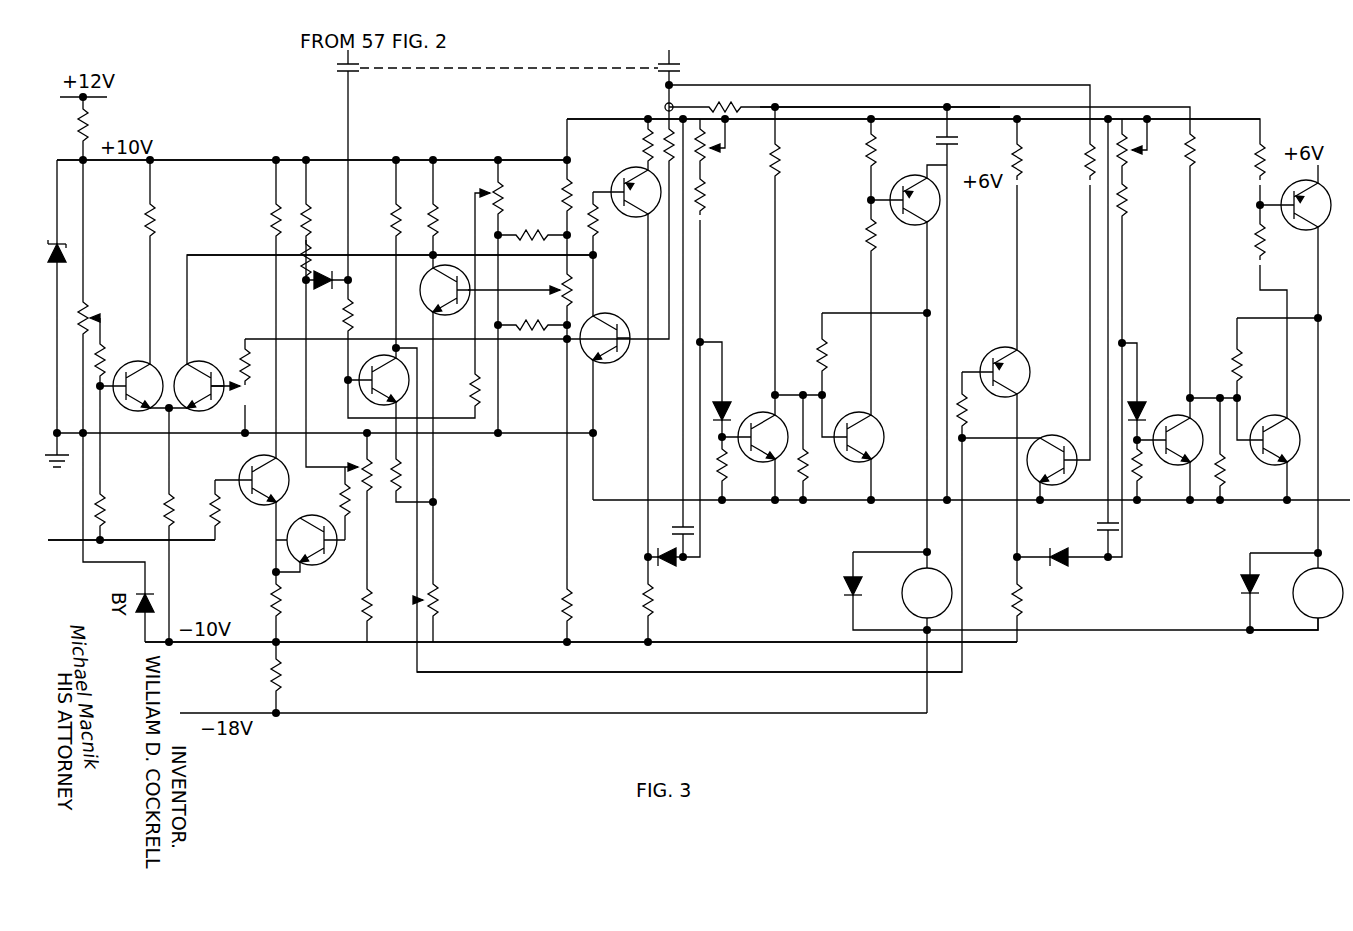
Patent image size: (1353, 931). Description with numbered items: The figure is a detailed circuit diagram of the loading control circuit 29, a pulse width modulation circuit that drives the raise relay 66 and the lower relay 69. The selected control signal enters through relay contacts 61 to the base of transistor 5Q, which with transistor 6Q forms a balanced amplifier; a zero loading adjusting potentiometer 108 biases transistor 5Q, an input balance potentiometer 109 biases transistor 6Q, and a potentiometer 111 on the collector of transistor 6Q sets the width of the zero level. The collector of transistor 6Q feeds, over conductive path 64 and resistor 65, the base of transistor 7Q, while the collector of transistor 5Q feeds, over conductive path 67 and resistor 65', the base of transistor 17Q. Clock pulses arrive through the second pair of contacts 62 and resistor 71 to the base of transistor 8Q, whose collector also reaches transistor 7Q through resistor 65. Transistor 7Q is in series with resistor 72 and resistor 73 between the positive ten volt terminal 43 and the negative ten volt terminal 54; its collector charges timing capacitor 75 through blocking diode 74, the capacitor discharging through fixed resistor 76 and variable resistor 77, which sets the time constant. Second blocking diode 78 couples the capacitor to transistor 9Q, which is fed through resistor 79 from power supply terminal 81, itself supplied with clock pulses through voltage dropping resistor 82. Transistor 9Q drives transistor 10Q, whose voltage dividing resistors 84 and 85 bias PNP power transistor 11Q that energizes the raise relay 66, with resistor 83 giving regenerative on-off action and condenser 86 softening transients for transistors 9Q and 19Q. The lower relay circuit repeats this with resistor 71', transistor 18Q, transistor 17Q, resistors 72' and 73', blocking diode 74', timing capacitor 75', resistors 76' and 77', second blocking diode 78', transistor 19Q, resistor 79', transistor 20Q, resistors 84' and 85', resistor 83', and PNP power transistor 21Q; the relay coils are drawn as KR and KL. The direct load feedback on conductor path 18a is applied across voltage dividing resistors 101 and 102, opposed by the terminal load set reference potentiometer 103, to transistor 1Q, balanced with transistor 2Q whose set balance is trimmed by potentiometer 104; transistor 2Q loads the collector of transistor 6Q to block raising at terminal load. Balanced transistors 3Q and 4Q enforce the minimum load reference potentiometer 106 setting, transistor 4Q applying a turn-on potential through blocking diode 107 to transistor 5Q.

The relay contacts 61 is at (345, 78).
The second pair of contacts 62 is at (664, 84).
The resistor 71 is at (642, 131).
The resistor 73 is at (630, 145).
The transistor 7Q is at (618, 182).
The resistor 65 is at (610, 232).
The variable resistor 77 is at (719, 153).
The fixed resistor 76 is at (719, 200).
The voltage dropping resistor 82 is at (724, 102).
The power supply terminal 81 is at (820, 105).
The loading control circuit 29 is at (903, 65).
The resistor 79 is at (793, 160).
The voltage dividing resistor 84 is at (855, 162).
The condenser 86 is at (938, 142).
The voltage dividing resistor 85 is at (856, 235).
The PNP power transistor 11Q is at (905, 222).
The resistor 83 is at (838, 351).
The second blocking diode 78 is at (734, 395).
The transistor 9Q is at (770, 460).
The transistor 10Q is at (838, 457).
The timing capacitor 75 is at (671, 517).
The blocking diode 74 is at (677, 571).
The resistor 72 is at (625, 600).
The negative 10 volt power supply terminal 54 is at (682, 642).
The conductive path 67 is at (415, 672).
The raise relay 66 is at (845, 592).
The relay coil KR is at (927, 593).
The positive 10 volt power supply terminal 43 is at (408, 158).
The zero loading adjusting potentiometer 108 is at (504, 212).
The input balance potentiometer 109 is at (560, 285).
The transistor 6Q is at (424, 305).
The transistor 5Q is at (355, 398).
The transistor 8Q is at (612, 360).
The minimum load reference potentiometer 106 is at (358, 462).
The potentiometer 111 is at (442, 596).
The conductive path 64 is at (230, 254).
The blocking diode 107 is at (322, 290).
The terminal load set reference potentiometer 103 is at (87, 310).
The voltage dividing resistor 102 is at (104, 352).
The potentiometer 104 is at (240, 365).
The transistor 1Q is at (136, 410).
The transistor 2Q is at (204, 408).
The transistor 3Q is at (244, 466).
The transistor 4Q is at (322, 565).
The voltage dividing resistor 101 is at (104, 512).
The conductor path 18a is at (60, 540).
The resistor 71' is at (1075, 160).
The resistor 73' is at (1034, 174).
The variable resistor 77' is at (1143, 158).
The fixed resistor 76' is at (1144, 209).
The resistor 79' is at (1177, 150).
The voltage dividing resistor 84' is at (1242, 163).
The voltage dividing resistor 85' is at (1236, 241).
The PNP power transistor 21Q is at (1296, 226).
The transistor 17Q is at (1030, 376).
The transistor 18Q is at (1062, 444).
The resistor 65' is at (980, 410).
The second blocking diode 78' is at (1152, 401).
The transistor 19Q is at (1160, 465).
The transistor 20Q is at (1256, 422).
The resistor 83' is at (1255, 359).
The timing capacitor 75' is at (1090, 523).
The blocking diode 74' is at (1074, 571).
The resistor 72' is at (1036, 600).
The relay coil KL is at (1318, 593).
The lower relay 69 is at (1322, 620).